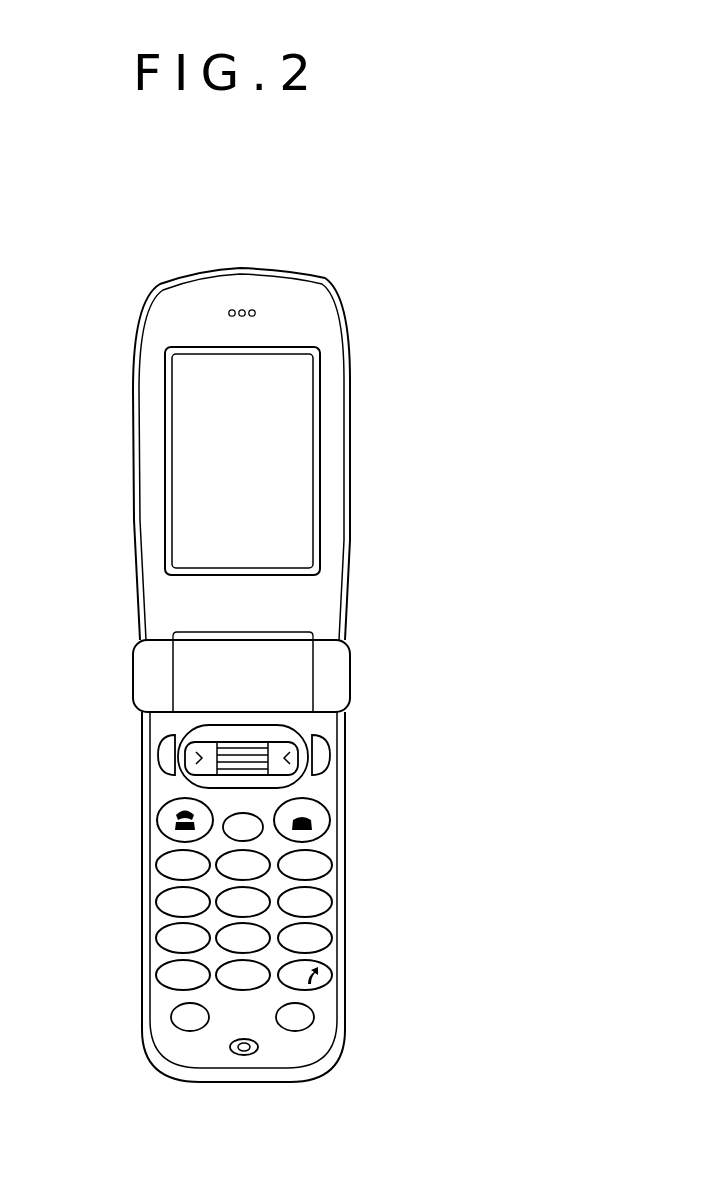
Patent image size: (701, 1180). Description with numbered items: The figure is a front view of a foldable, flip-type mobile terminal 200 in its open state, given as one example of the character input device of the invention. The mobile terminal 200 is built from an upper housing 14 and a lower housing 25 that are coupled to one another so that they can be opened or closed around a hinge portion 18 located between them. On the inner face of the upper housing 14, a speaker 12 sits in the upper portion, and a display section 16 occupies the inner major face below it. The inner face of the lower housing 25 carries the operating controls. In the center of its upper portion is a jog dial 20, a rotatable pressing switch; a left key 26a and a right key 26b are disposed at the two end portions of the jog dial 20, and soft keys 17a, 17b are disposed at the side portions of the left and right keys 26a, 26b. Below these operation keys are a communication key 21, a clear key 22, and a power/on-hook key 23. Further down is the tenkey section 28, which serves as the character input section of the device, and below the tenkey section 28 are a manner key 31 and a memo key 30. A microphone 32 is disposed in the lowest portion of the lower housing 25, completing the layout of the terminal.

The mobile terminal 200 is at (320, 200).
The speaker 12 is at (254, 308).
The upper housing 14 is at (358, 440).
The display section 16 is at (181, 476).
The hinge portion 18 is at (133, 665).
The soft key 17a is at (160, 750).
The soft key 17b is at (322, 755).
The jog dial 20 is at (243, 750).
The left key 26a is at (198, 768).
The right key 26b is at (292, 770).
The communication key 21 is at (158, 820).
The clear key 22 is at (262, 830).
The power/on-hook key 23 is at (329, 824).
The lower housing 25 is at (357, 937).
The tenkey section 28 is at (132, 852).
The memo key 30 is at (314, 1017).
The manner key 31 is at (171, 1018).
The microphone 32 is at (258, 1048).